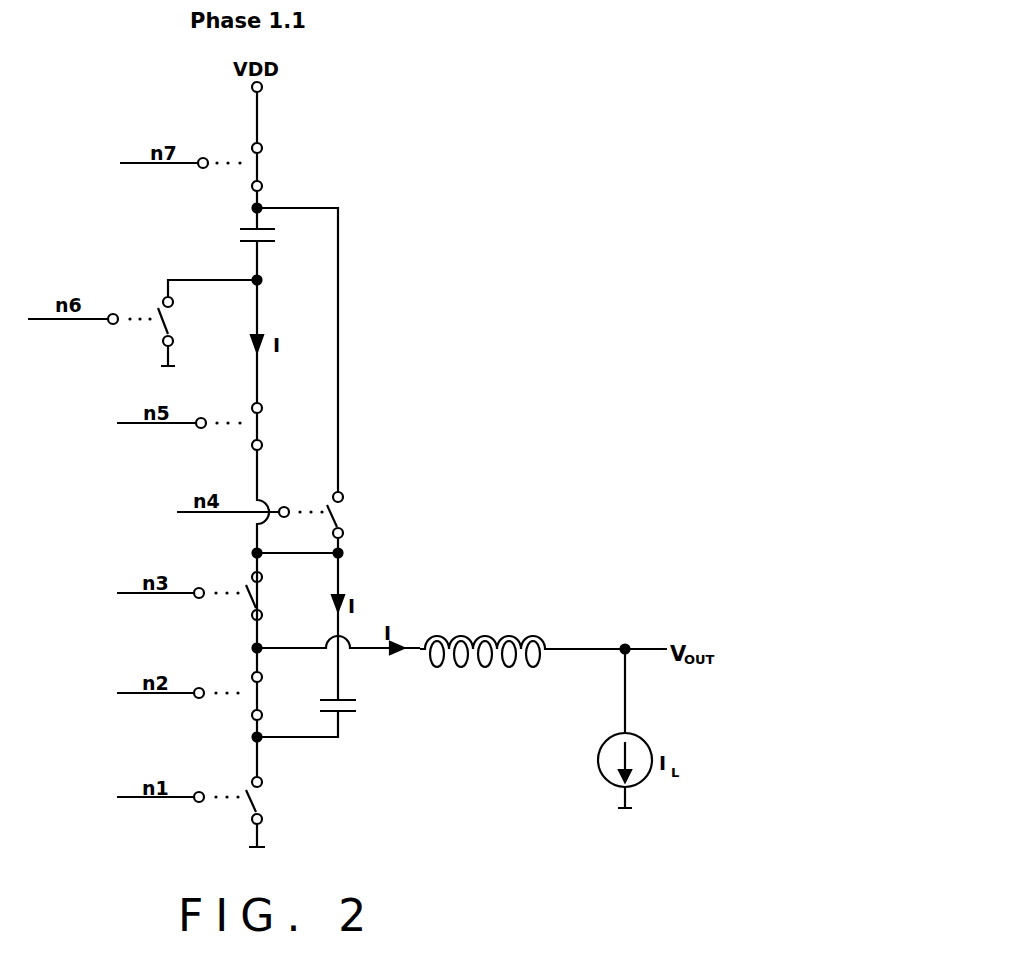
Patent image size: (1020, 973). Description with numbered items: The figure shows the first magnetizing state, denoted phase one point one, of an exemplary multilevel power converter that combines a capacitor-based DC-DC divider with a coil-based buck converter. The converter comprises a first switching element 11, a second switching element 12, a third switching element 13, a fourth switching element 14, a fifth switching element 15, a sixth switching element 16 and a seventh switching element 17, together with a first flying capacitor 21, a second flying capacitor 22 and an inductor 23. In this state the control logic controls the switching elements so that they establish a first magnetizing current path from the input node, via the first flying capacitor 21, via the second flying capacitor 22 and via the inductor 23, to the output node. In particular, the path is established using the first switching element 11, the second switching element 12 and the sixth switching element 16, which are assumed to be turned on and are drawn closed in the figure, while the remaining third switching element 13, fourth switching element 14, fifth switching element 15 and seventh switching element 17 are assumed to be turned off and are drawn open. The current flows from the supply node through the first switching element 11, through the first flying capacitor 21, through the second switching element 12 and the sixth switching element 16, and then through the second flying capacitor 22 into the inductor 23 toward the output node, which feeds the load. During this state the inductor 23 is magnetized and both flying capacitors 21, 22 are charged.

The first switching element 11 is at (270, 163).
The second switching element 12 is at (268, 423).
The third switching element 13 is at (181, 318).
The fourth switching element 14 is at (350, 513).
The fifth switching element 15 is at (268, 592).
The sixth switching element 16 is at (268, 692).
The seventh switching element 17 is at (268, 797).
The first flying capacitor 21 is at (270, 252).
The second flying capacitor 22 is at (365, 705).
The inductor 23 is at (498, 623).